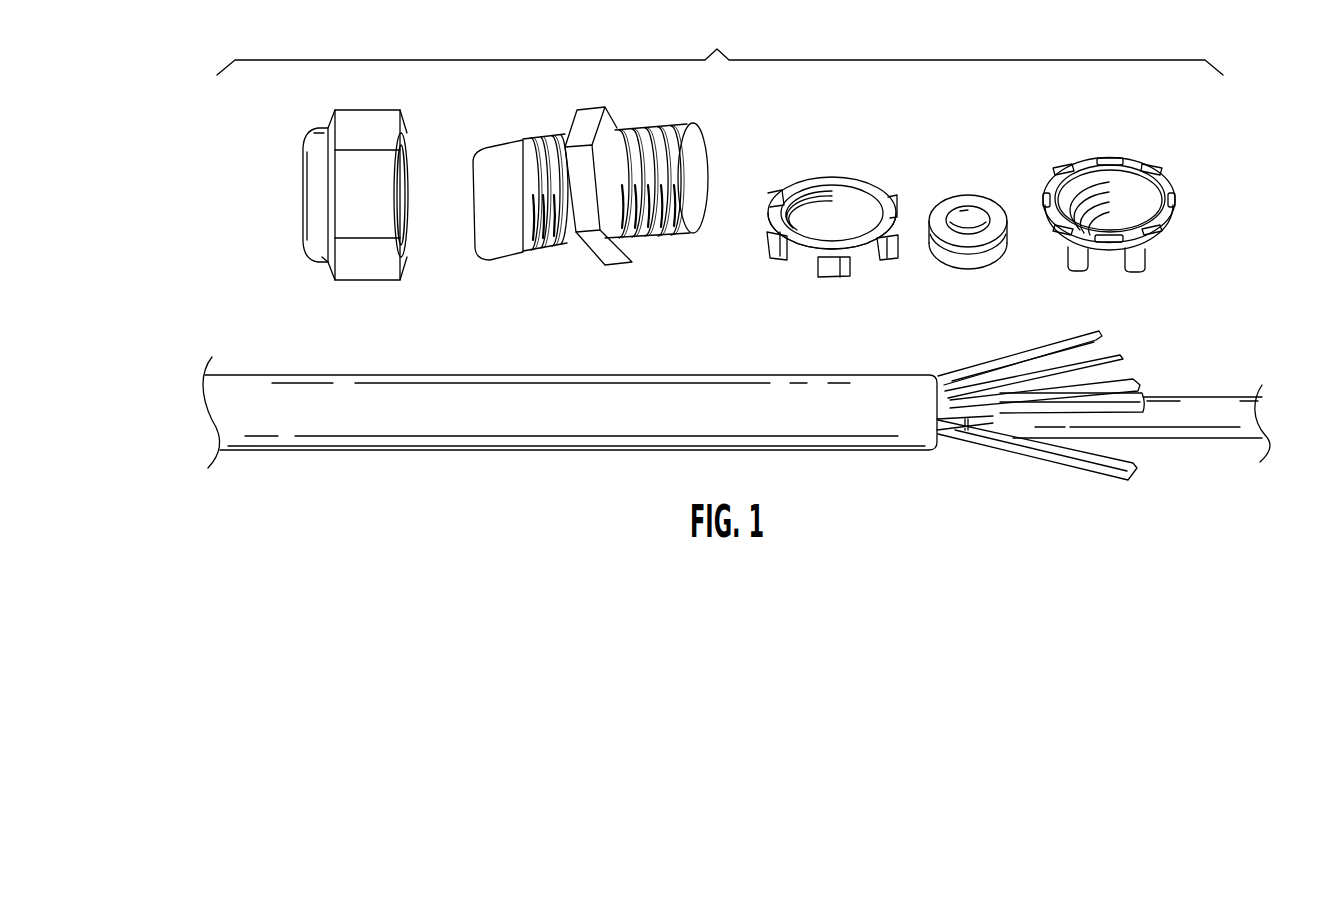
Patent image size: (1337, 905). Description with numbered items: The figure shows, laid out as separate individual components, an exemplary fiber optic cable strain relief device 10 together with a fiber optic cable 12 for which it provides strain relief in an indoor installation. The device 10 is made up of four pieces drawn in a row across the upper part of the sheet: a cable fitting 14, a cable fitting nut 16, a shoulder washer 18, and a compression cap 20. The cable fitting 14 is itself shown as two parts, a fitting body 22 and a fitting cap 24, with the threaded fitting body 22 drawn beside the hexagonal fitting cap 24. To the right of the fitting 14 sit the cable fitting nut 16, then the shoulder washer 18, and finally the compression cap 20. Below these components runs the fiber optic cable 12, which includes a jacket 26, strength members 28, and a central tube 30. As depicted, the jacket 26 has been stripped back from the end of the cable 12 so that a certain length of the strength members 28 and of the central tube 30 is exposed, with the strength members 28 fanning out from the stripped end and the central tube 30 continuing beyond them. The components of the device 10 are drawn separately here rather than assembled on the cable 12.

The fiber optic cable strain relief device 10 is at (720, 45).
The fiber optic cable 12 is at (863, 452).
The cable fitting 14 is at (480, 292).
The cable fitting nut 16 is at (817, 270).
The shoulder washer 18 is at (968, 268).
The compression cap 20 is at (1125, 272).
The fitting body 22 is at (640, 124).
The fitting cap 24 is at (359, 109).
The jacket 26 is at (504, 451).
The strength members 28 is at (1070, 342).
The central tube 30 is at (1218, 397).